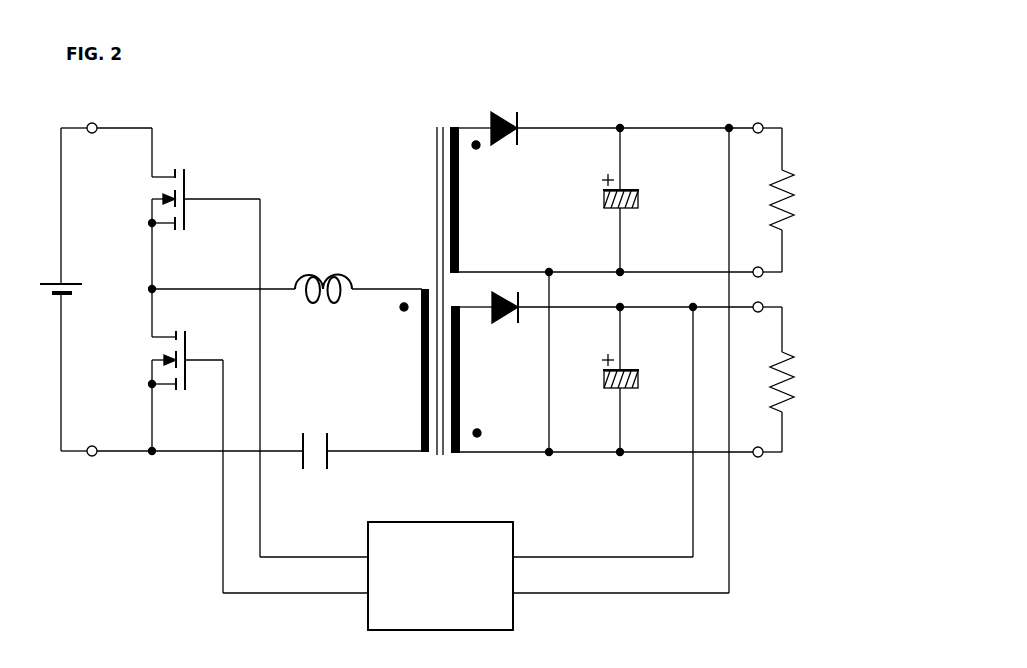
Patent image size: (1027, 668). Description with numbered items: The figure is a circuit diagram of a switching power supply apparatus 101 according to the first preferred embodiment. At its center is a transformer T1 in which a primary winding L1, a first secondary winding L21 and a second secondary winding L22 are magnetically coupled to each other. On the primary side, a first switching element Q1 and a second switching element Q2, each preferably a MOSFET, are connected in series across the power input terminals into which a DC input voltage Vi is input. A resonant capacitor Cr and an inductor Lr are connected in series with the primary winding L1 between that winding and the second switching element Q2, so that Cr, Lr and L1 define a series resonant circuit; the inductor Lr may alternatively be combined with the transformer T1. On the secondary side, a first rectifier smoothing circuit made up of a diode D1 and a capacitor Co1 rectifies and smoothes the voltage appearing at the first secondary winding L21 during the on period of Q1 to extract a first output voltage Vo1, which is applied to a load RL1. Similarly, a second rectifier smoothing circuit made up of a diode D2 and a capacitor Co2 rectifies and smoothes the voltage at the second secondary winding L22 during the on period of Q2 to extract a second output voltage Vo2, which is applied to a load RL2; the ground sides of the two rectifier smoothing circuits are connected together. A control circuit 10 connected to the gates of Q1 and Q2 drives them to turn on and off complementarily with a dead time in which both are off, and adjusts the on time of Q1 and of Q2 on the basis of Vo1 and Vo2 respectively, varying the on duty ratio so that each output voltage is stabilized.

The switching power supply apparatus 101 is at (815, 39).
The control circuit 10 is at (513, 522).
The DC input voltage Vi is at (49, 284).
The first switching element Q1 is at (189, 199).
The second switching element Q2 is at (171, 360).
The inductor Lr is at (323, 276).
The resonant capacitor Cr is at (315, 436).
The transformer T1 is at (428, 112).
The primary winding L1 is at (408, 370).
The first secondary winding L21 is at (474, 200).
The second secondary winding L22 is at (475, 379).
The diode D1 is at (504, 115).
The diode D2 is at (505, 320).
The capacitor Co1 is at (638, 200).
The capacitor Co2 is at (638, 379).
The first output voltage Vo1 is at (705, 346).
The second output voltage Vo2 is at (698, 419).
The load RL1 is at (800, 200).
The load RL2 is at (800, 379).